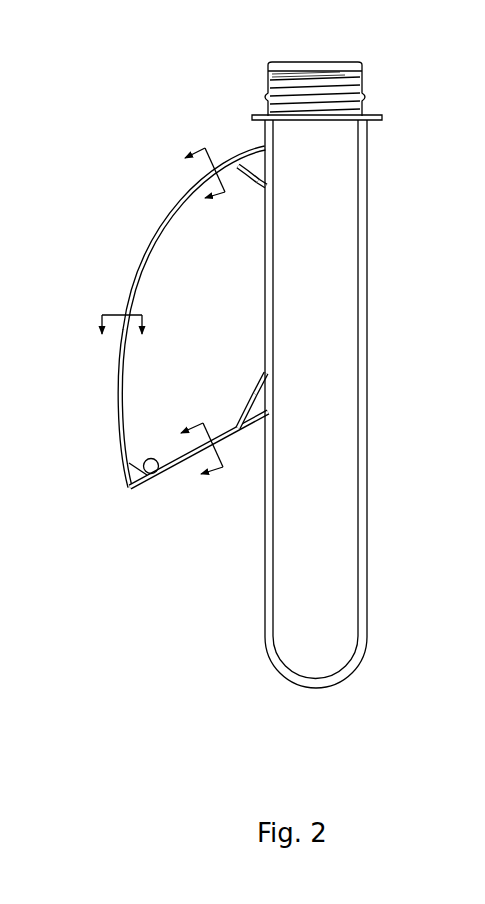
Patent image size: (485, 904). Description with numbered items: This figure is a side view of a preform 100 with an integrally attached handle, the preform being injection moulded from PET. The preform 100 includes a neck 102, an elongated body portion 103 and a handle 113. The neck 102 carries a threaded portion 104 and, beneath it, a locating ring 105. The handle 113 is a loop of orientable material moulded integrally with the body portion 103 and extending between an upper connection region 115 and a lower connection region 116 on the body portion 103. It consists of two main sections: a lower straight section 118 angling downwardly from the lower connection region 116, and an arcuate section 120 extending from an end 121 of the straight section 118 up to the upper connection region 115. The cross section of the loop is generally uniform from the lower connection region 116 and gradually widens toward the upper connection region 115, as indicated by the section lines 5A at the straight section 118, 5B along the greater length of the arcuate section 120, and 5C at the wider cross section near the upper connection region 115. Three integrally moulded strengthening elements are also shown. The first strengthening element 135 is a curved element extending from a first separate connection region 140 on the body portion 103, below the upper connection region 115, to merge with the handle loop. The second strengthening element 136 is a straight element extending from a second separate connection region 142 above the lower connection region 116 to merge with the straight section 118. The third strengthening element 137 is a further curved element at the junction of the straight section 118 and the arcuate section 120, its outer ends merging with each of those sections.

The preform 100 is at (408, 34).
The neck 102 is at (249, 73).
The body portion 103 is at (367, 315).
The threaded portion 104 is at (357, 74).
The locating ring 105 is at (372, 117).
The handle 113 is at (121, 258).
The upper connection region 115 is at (249, 137).
The lower connection region 116 is at (259, 430).
The lower straight section 118 is at (212, 426).
The arcuate section 120 is at (140, 282).
The end of the straight section 121 is at (121, 501).
The first strengthening element 135 is at (252, 178).
The second strengthening element 136 is at (259, 386).
The third strengthening element 137 is at (158, 478).
The first separate connection region 140 is at (275, 180).
The second separate connection region 142 is at (278, 366).
The section line 5A is at (188, 455).
The section line 5B is at (118, 339).
The section line 5C is at (189, 188).